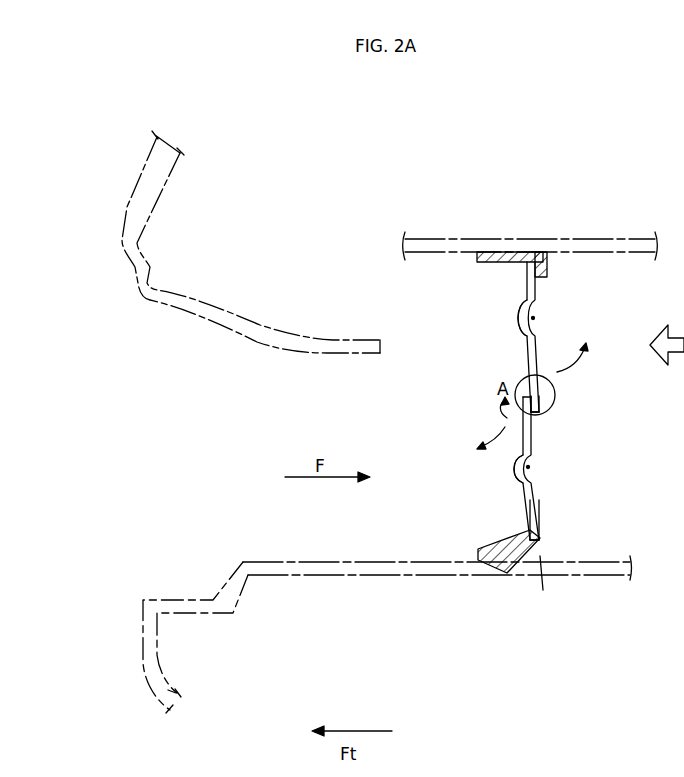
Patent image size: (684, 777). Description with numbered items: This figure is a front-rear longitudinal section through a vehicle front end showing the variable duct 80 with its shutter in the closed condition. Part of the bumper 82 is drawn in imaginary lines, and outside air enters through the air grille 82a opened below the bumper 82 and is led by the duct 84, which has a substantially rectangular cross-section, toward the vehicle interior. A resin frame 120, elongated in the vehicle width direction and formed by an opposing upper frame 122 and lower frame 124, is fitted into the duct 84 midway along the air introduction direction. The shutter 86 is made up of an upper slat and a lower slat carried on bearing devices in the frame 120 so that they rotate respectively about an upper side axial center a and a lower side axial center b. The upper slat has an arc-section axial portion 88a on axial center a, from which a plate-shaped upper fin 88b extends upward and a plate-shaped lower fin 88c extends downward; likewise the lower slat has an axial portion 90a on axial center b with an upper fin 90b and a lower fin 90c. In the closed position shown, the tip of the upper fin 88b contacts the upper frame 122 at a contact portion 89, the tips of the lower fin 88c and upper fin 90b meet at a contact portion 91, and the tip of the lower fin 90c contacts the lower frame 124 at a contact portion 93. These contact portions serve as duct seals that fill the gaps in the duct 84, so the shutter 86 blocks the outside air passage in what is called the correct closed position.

The variable duct 80 is at (325, 260).
The bumper 82 is at (140, 173).
The air grille 82a is at (262, 445).
The duct 84 is at (575, 255).
The shutter 86 is at (550, 406).
The axial portion 88a is at (518, 315).
The upper fin 88b is at (537, 290).
The lower fin 88c is at (540, 395).
The contact portion 89 is at (548, 272).
The axial portion 90a is at (515, 467).
The upper fin 90b is at (533, 430).
The lower fin 90c is at (541, 508).
The contact portion 91 is at (520, 375).
The contact portion 93 is at (540, 541).
The frame 120 is at (524, 412).
The upper frame 122 is at (510, 263).
The lower frame 124 is at (548, 587).
The upper side axial center a is at (535, 318).
The lower side axial center b is at (530, 467).